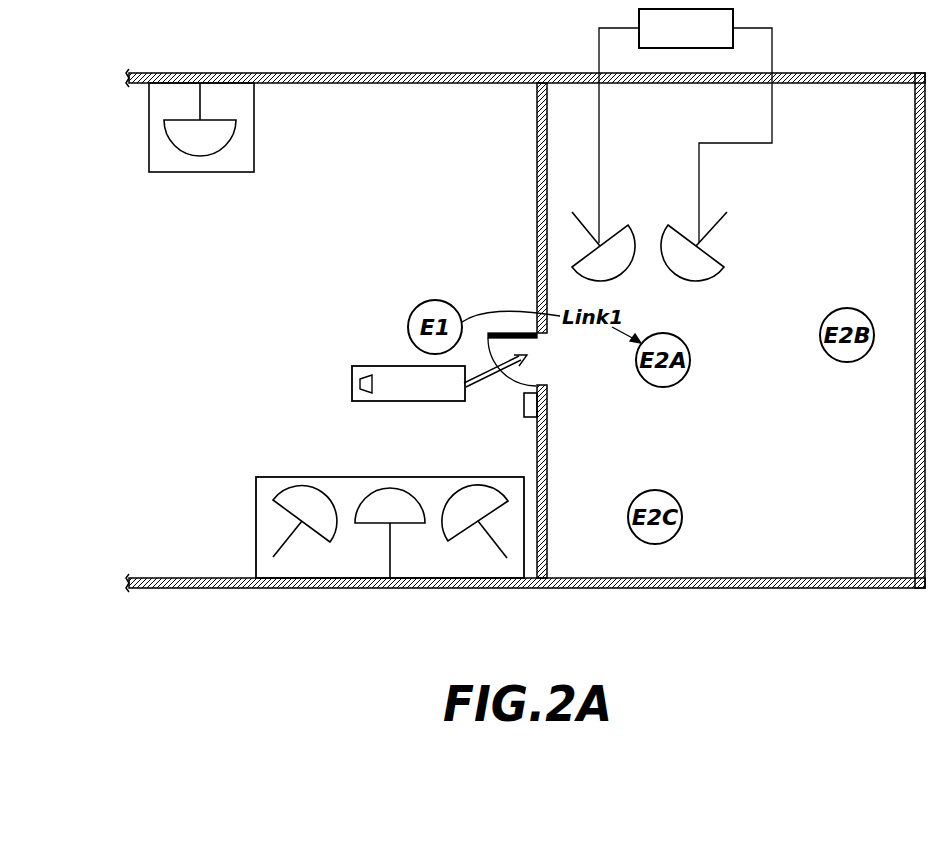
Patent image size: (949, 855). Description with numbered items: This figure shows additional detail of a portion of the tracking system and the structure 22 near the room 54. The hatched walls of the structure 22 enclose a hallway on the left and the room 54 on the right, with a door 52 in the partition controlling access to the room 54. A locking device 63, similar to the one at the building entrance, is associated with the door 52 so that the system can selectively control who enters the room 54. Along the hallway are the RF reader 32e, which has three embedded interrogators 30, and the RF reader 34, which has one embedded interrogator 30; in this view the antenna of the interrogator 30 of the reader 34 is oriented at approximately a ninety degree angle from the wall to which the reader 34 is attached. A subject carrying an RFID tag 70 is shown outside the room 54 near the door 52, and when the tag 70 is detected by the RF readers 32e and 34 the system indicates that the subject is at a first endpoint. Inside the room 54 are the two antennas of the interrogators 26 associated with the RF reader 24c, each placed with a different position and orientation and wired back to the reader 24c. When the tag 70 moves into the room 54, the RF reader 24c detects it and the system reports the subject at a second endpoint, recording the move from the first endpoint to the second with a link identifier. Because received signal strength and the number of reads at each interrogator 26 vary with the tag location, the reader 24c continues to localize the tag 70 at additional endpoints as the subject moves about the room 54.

The structure 22 is at (476, 73).
The RF reader 24c is at (672, 42).
The interrogator 26 is at (617, 268).
The interrogator 30 is at (202, 152).
The RF reader 32e is at (256, 500).
The RF reader 34 is at (254, 125).
The door 52 is at (512, 340).
The room 54 is at (768, 489).
The locking device 63 is at (524, 405).
The RFID tag 70 is at (352, 382).